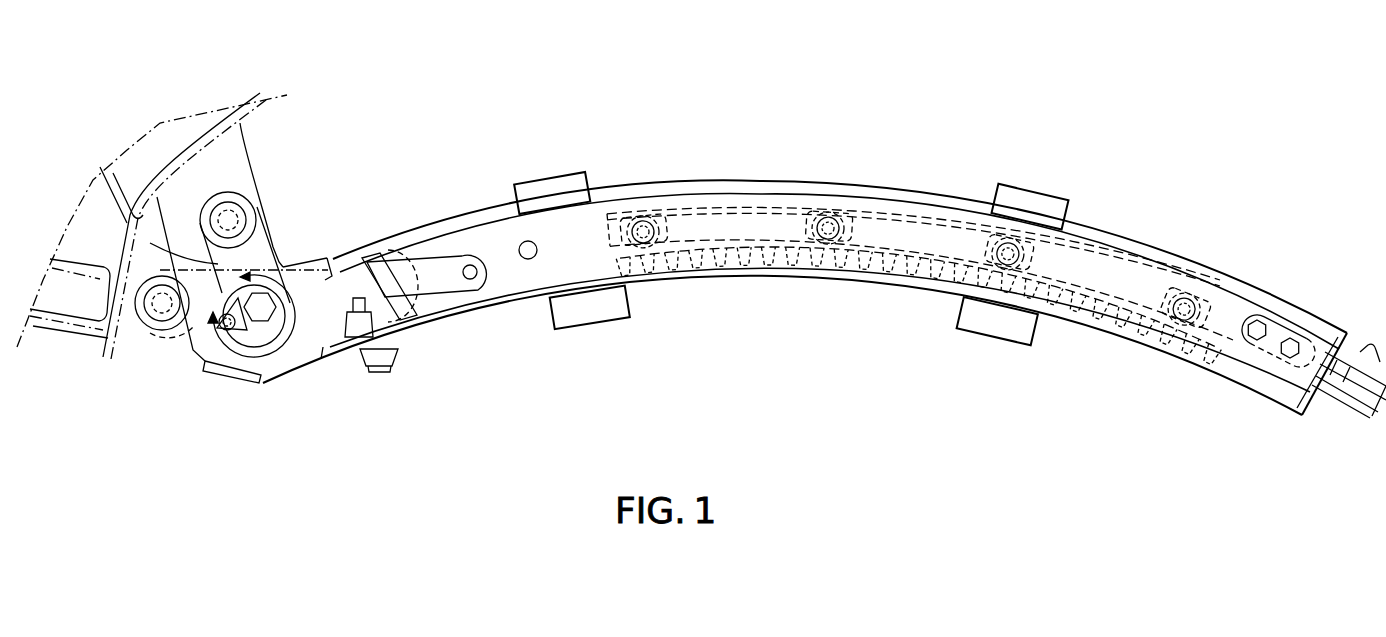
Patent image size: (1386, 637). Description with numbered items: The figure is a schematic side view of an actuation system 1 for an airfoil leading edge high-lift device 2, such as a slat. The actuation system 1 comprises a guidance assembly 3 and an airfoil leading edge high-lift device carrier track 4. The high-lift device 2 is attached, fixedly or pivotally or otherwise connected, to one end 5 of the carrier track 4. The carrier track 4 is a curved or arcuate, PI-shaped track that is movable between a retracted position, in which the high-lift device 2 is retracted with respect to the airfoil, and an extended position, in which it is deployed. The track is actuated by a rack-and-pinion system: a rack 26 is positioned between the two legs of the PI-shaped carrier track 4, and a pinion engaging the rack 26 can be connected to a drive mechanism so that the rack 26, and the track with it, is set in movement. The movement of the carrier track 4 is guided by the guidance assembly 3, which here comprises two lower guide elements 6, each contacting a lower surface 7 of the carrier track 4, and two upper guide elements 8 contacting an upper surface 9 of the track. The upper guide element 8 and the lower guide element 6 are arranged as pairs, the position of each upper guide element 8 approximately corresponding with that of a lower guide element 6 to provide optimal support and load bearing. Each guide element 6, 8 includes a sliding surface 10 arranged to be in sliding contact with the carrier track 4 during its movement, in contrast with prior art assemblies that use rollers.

The actuation system 1 is at (1018, 103).
The airfoil leading edge high-lift device 2 is at (100, 210).
The guidance assembly 3 is at (798, 260).
The airfoil leading edge high-lift device carrier track 4 is at (1138, 263).
The end of the carrier track 5 is at (212, 350).
The lower guide element 6 is at (570, 317).
The lower surface 7 is at (827, 283).
The upper guide element 8 is at (537, 193).
The upper surface 9 is at (830, 183).
The sliding surface 10 is at (587, 287).
The rack 26 is at (1120, 327).